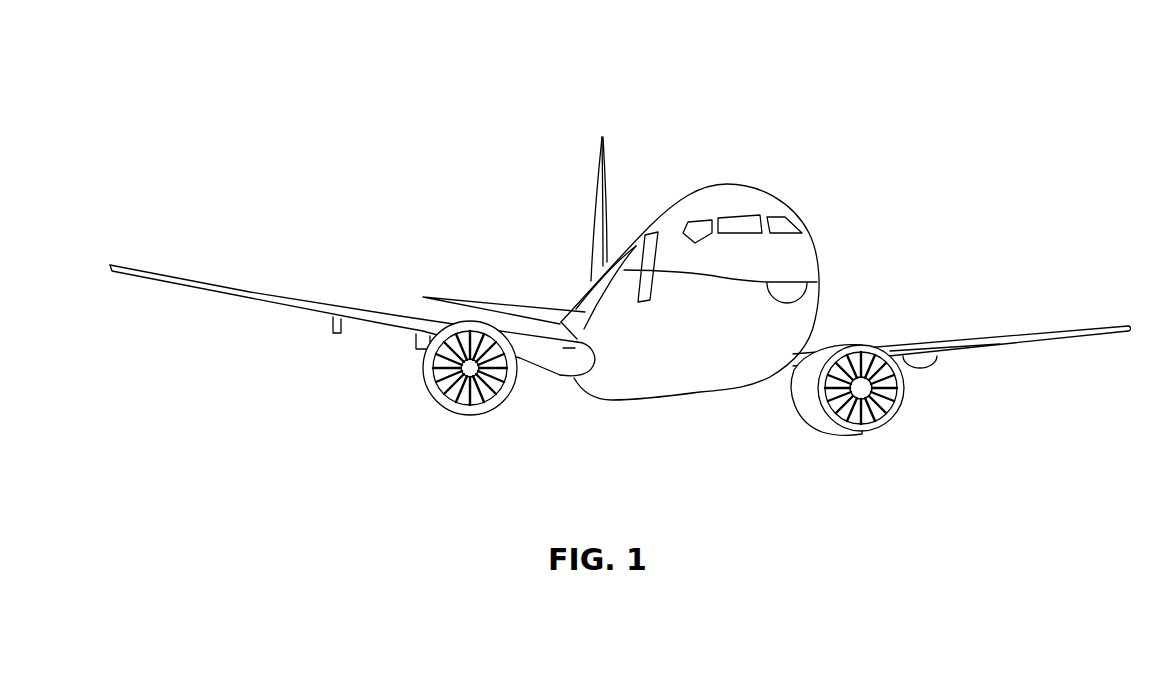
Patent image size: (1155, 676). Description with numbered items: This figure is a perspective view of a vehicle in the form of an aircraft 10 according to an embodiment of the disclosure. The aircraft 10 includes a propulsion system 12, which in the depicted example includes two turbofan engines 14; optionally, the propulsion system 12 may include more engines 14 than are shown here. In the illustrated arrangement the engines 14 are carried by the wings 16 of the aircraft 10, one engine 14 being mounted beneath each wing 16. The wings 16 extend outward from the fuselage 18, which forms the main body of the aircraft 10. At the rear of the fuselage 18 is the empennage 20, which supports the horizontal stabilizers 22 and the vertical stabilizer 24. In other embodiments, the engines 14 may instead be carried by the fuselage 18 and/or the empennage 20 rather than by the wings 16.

The aircraft 10 is at (368, 86).
The propulsion system 12 is at (940, 425).
The turbofan engines 14 is at (467, 414).
The wings 16 is at (247, 292).
The fuselage 18 is at (820, 250).
The empennage 20 is at (590, 280).
The horizontal stabilizers 22 is at (461, 298).
The vertical stabilizer 24 is at (600, 176).